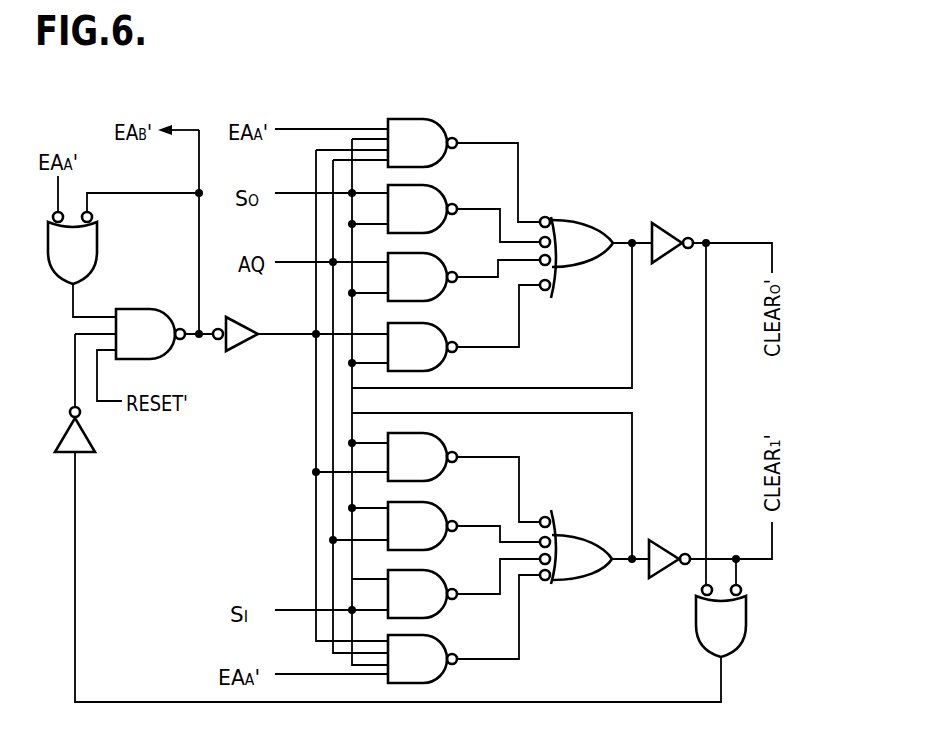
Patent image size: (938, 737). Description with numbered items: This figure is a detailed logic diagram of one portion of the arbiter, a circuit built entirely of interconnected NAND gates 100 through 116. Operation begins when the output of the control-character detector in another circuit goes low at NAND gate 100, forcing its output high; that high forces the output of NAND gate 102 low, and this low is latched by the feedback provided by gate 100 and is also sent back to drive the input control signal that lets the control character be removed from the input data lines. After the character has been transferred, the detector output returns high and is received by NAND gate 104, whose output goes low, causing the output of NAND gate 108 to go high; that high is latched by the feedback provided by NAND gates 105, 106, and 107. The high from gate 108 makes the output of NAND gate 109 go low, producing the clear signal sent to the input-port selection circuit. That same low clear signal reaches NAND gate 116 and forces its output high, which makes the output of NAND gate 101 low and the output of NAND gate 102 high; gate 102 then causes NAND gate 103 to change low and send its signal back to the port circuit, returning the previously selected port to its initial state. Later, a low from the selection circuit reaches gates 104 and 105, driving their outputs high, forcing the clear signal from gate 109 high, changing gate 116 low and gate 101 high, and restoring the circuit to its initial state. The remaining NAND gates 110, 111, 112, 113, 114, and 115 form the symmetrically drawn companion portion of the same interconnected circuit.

The NAND gate 100 is at (86, 256).
The NAND gate 101 is at (84, 449).
The NAND gate 102 is at (152, 345).
The NAND gate 103 is at (230, 351).
The NAND gate 104 is at (424, 156).
The NAND gate 105 is at (424, 222).
The NAND gate 106 is at (424, 290).
The NAND gate 107 is at (424, 360).
The NAND gate 108 is at (588, 253).
The NAND gate 109 is at (676, 223).
The NAND gate 110 is at (424, 470).
The NAND gate 111 is at (424, 539).
The NAND gate 112 is at (424, 607).
The NAND gate 113 is at (424, 672).
The NAND gate 114 is at (586, 570).
The NAND gate 115 is at (666, 540).
The NAND gate 116 is at (729, 631).